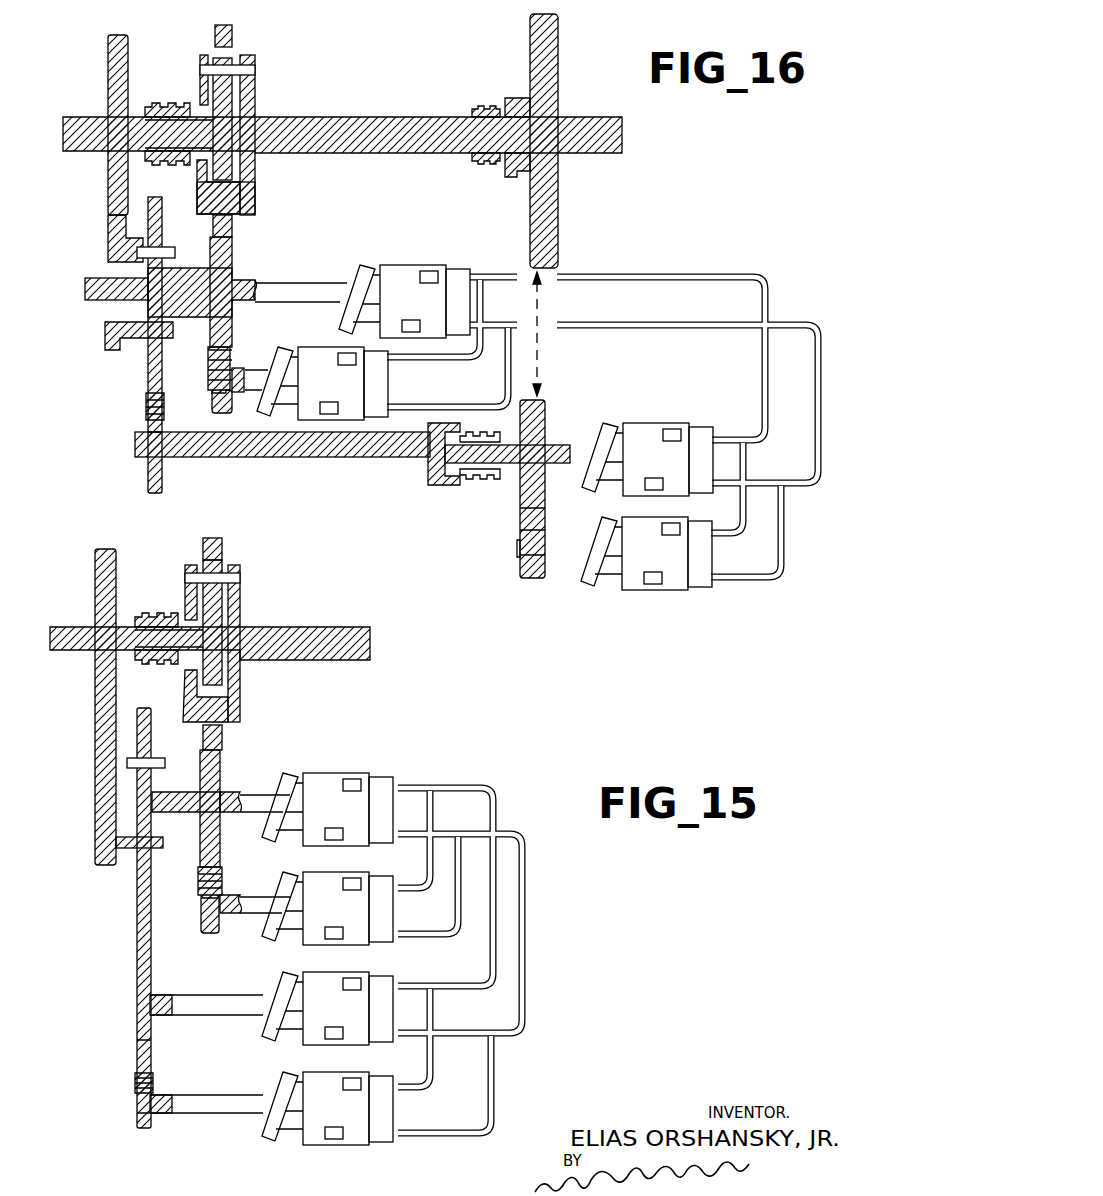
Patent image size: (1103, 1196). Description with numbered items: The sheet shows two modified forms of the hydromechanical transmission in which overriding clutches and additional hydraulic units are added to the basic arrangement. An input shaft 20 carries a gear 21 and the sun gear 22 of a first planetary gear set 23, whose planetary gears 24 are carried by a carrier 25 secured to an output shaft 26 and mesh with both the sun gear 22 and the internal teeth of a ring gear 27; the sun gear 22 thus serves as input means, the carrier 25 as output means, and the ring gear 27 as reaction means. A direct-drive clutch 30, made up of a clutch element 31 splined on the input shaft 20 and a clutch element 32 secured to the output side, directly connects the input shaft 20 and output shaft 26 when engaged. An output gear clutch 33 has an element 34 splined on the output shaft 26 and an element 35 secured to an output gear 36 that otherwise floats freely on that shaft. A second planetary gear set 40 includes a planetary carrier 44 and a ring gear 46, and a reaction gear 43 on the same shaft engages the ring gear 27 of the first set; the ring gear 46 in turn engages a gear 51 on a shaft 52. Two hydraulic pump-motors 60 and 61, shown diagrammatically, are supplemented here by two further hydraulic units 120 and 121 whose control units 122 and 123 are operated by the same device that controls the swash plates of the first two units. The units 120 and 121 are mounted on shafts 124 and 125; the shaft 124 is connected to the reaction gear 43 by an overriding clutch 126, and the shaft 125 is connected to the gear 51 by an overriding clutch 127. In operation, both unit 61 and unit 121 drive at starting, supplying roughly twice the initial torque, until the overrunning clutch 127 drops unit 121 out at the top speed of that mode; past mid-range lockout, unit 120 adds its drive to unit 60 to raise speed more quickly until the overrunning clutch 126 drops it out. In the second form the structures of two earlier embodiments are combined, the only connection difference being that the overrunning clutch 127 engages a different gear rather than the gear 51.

In FIG. 16, the input shaft 20 is at (83, 139).
In FIG. 15, the input shaft 20 is at (67, 628).
In FIG. 16, the gear 21 is at (107, 63).
In FIG. 15, the gear 21 is at (95, 566).
In FIG. 16, the sun gear 22 is at (232, 110).
In FIG. 15, the sun gear 22 is at (215, 626).
In FIG. 16, the first planetary gear set 23 is at (268, 49).
In FIG. 15, the first planetary gear set 23 is at (257, 564).
In FIG. 16, the planetary gears 24 is at (232, 81).
In FIG. 16, the carrier 25 is at (255, 188).
In FIG. 16, the output shaft 26 is at (382, 154).
In FIG. 16, the ring gear 27 is at (232, 36).
In FIG. 15, the ring gear 27 is at (222, 553).
In FIG. 16, the direct-drive clutch 30 is at (160, 76).
In FIG. 15, the direct-drive clutch 30 is at (147, 593).
In FIG. 16, the clutch element 31 is at (152, 106).
In FIG. 16, the clutch element 32 is at (199, 92).
In FIG. 16, the output gear clutch 33 is at (473, 109).
In FIG. 16, the clutch element 34 is at (470, 114).
In FIG. 16, the clutch element 35 is at (518, 97).
In FIG. 16, the output gear 36 is at (559, 69).
In FIG. 16, the second planetary gear set 40 is at (134, 364).
In FIG. 16, the reaction gear 43 is at (232, 263).
In FIG. 16, the planetary carrier 44 is at (105, 336).
In FIG. 16, the ring gear 46 is at (163, 374).
In FIG. 16, the gear 51 is at (146, 471).
In FIG. 16, the shaft 52 is at (272, 459).
In FIG. 15, the hydraulic pump-motor 60 is at (345, 772).
In FIG. 15, the hydraulic pump-motor 61 is at (340, 974).
In FIG. 15, the hydraulic unit 120 is at (337, 873).
In FIG. 15, the hydraulic unit 121 is at (340, 1075).
In FIG. 15, the control unit 122 is at (272, 884).
In FIG. 15, the control unit 123 is at (270, 1088).
In FIG. 15, the shaft 124 is at (236, 919).
In FIG. 15, the shaft 125 is at (220, 1114).
In FIG. 15, the overriding clutch 126 is at (194, 938).
In FIG. 15, the overriding clutch 127 is at (145, 1132).